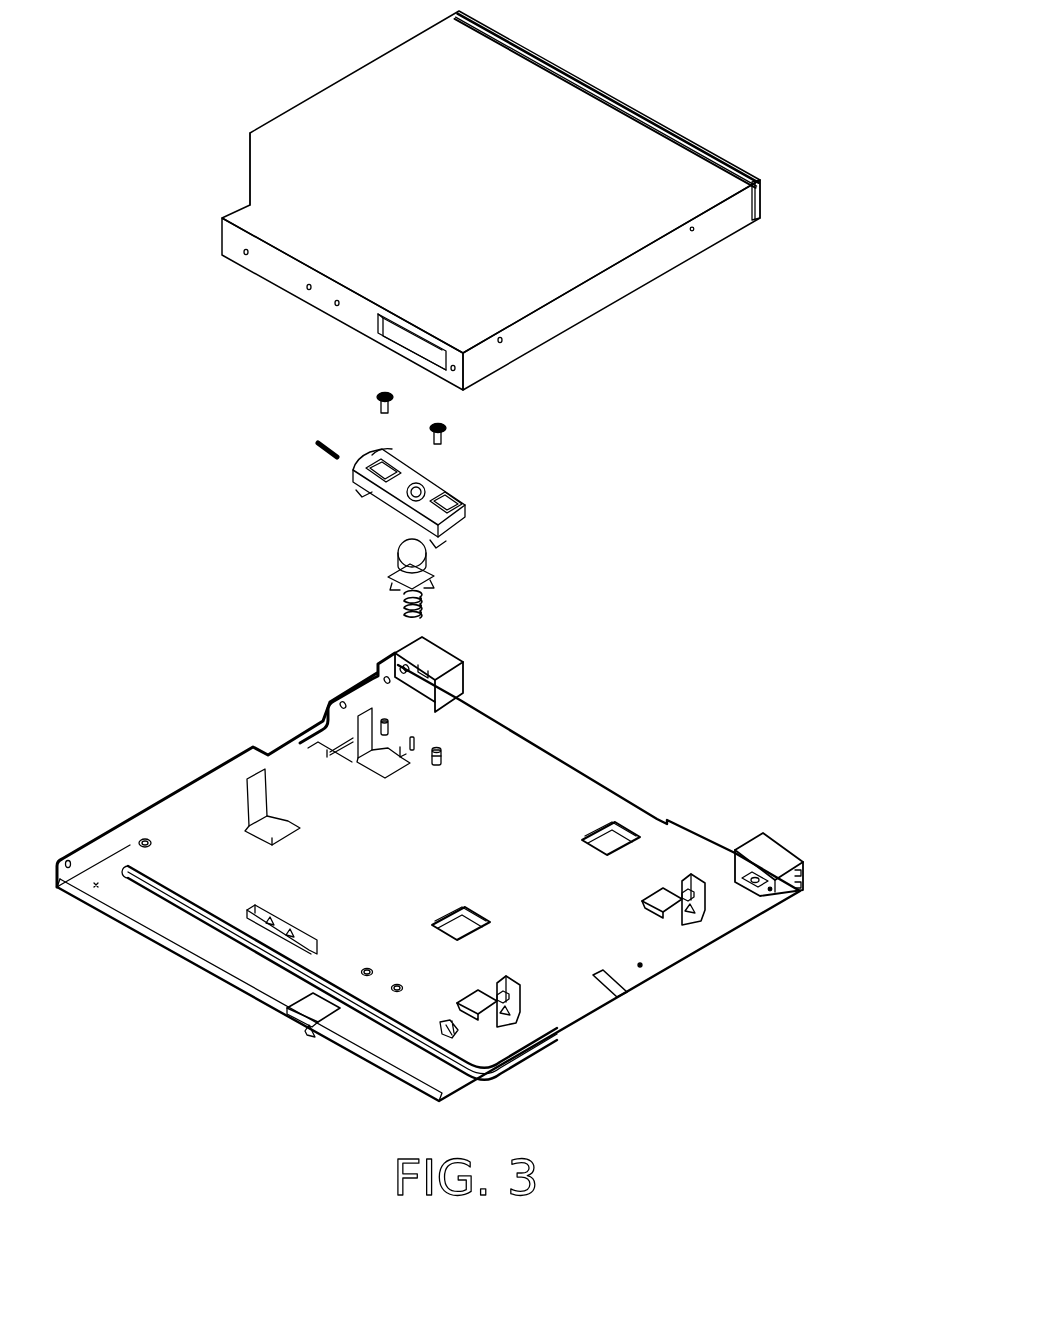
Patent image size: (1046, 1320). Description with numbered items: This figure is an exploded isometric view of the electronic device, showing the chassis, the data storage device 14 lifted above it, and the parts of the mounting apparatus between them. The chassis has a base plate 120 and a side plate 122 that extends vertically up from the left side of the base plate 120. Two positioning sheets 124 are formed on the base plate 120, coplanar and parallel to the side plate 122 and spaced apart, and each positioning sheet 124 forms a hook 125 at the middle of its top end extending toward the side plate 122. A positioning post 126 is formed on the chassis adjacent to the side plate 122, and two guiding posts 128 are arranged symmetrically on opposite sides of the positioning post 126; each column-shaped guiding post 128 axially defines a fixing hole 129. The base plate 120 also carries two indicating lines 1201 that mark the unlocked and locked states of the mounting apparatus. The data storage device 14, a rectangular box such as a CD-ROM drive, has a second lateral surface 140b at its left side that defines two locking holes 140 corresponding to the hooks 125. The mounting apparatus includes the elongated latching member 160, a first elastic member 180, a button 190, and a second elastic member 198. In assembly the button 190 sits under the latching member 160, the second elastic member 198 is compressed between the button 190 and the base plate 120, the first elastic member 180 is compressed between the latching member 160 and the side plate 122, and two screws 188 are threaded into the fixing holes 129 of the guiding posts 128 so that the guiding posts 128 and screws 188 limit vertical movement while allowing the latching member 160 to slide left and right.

The data storage device 14 is at (622, 154).
The locking holes 140 is at (695, 231).
The second lateral surface 140b is at (570, 305).
The screws 188 is at (381, 394).
The first elastic member 180 is at (313, 455).
The latching member 160 is at (440, 490).
The button 190 is at (412, 553).
The second elastic member 198 is at (421, 603).
The base plate 120 is at (577, 800).
The side plate 122 is at (157, 818).
The fixing hole 129 is at (373, 700).
The indicating lines 1201 is at (330, 753).
The positioning post 126 is at (453, 715).
The guiding posts 128 is at (445, 753).
The positioning sheets 124 is at (680, 880).
The hook 125 is at (700, 874).